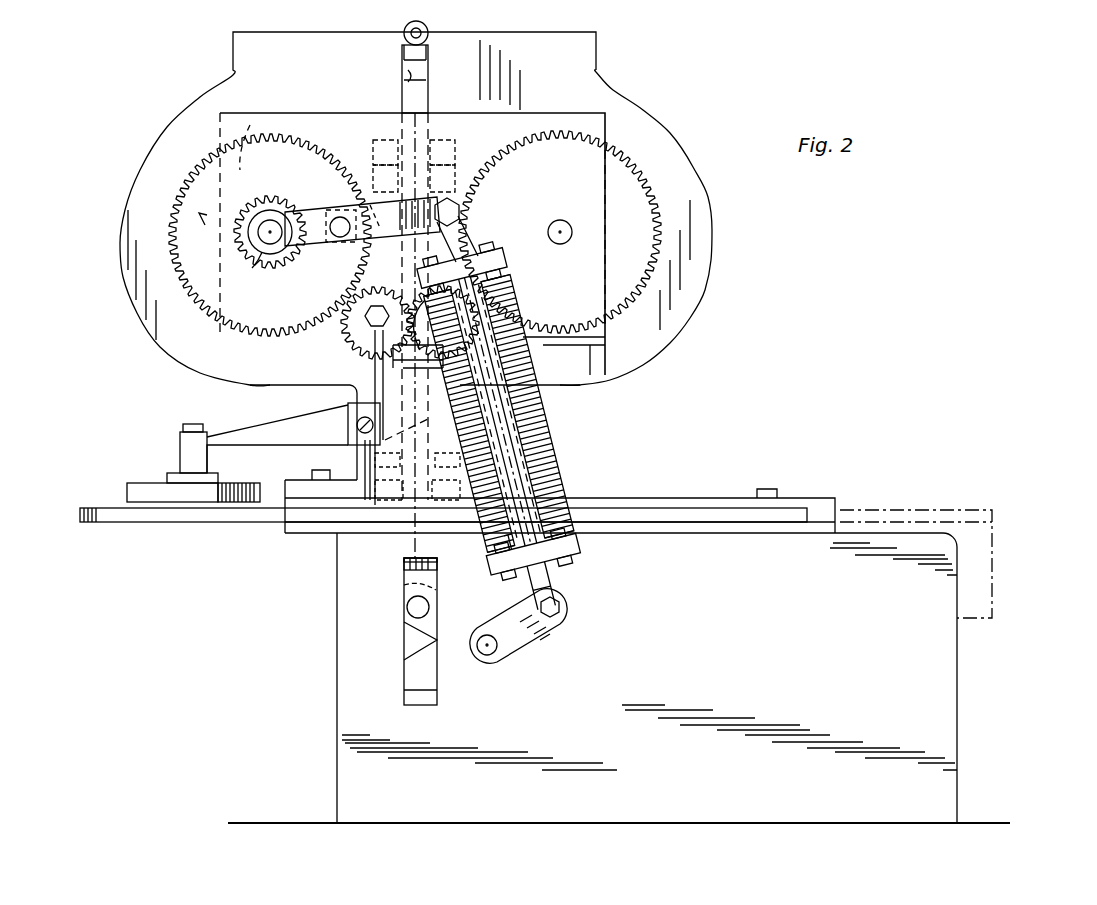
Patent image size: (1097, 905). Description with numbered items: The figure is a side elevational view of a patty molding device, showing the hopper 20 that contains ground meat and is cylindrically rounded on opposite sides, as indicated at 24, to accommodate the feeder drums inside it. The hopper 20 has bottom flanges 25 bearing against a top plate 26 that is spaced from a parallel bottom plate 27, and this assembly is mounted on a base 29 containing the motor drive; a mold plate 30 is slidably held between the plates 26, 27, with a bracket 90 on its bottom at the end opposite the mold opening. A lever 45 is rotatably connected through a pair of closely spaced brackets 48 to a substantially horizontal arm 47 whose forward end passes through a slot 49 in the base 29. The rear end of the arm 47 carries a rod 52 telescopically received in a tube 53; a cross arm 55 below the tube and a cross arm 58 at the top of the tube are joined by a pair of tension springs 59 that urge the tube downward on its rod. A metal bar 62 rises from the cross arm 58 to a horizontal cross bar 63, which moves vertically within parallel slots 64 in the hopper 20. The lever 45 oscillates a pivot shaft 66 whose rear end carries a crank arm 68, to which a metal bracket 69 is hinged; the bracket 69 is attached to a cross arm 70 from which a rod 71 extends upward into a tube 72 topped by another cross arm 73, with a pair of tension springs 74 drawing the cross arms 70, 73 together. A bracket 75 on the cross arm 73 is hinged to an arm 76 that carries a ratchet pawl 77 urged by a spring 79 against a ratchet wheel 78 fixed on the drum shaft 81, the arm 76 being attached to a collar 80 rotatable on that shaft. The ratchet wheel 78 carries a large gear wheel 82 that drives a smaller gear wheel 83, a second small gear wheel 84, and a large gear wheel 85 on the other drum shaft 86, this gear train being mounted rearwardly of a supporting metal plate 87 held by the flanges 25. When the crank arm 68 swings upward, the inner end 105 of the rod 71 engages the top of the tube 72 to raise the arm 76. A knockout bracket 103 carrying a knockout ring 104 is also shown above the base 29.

The hopper 20 is at (575, 72).
The cylindrically rounded sides 24 is at (125, 300).
The bottom flanges 25 is at (298, 490).
The top plate 26 is at (672, 504).
The bottom plate 27 is at (742, 532).
The base 29 is at (868, 642).
The mold plate 30 is at (612, 512).
The lever 45 is at (405, 642).
The arm 47 is at (404, 574).
The brackets 48 is at (405, 596).
The slot 49 is at (404, 682).
The rod 52 is at (426, 566).
The tube 53 is at (345, 408).
The cross arm 55 is at (398, 500).
The cross arm 58 is at (455, 152).
The tension springs 59 is at (375, 178).
The metal bar 62 is at (430, 112).
The cross bar 63 is at (428, 31).
The vertical parallel slots 64 is at (393, 44).
The pivot shaft 66 is at (482, 656).
The crank arm 68 is at (520, 655).
The metal bracket 69 is at (570, 582).
The cross arm 70 is at (559, 548).
The rod 71 is at (484, 577).
The tube 72 is at (505, 423).
The cross arm 73 is at (477, 256).
The tension springs 74 is at (532, 372).
The bracket 75 is at (458, 236).
The arm 76 is at (338, 205).
The ratchet pawl 77 is at (345, 215).
The ratchet wheel 78 is at (275, 256).
The spring 79 is at (344, 240).
The collar 80 is at (250, 250).
The drum shaft 81 is at (262, 280).
The gear wheel 82 is at (267, 157).
The gear wheel 83 is at (355, 340).
The gear wheel 84 is at (432, 265).
The gear wheel 85 is at (589, 189).
The drum shaft 86 is at (564, 243).
The supporting metal plate 87 is at (245, 135).
The bracket 90 is at (998, 588).
The knockout bracket 103 is at (252, 432).
The knockout ring 104 is at (150, 492).
The inner end 105 is at (525, 404).